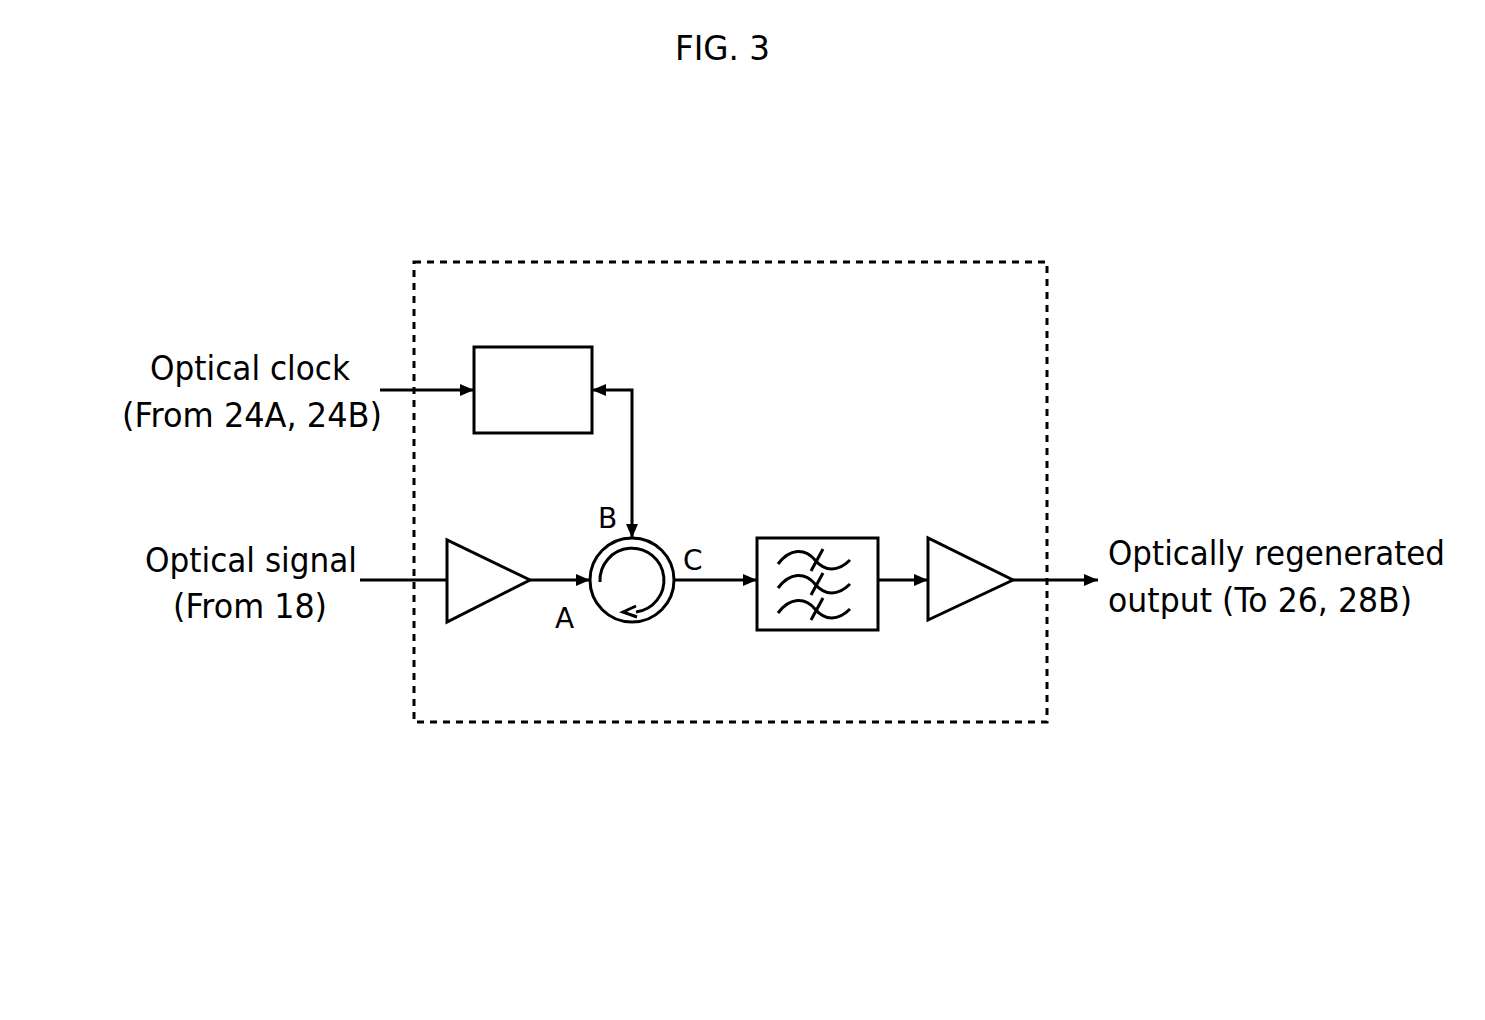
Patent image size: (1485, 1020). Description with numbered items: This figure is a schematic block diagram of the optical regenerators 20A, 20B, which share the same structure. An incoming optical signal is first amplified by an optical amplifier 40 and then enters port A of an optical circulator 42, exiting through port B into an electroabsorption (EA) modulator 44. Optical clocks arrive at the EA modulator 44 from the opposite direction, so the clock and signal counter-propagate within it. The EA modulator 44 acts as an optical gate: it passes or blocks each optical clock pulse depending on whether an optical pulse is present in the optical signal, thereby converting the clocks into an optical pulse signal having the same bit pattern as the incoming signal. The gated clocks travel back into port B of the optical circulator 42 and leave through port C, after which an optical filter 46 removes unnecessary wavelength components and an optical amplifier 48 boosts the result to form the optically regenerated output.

The optical regenerator 20A is at (730, 459).
The optical regenerator 20B is at (920, 288).
The optical amplifier 40 is at (483, 570).
The optical circulator 42 is at (617, 612).
The electroabsorption (EA) modulator 44 is at (526, 362).
The optical filter 46 is at (819, 546).
The optical amplifier 48 is at (968, 560).